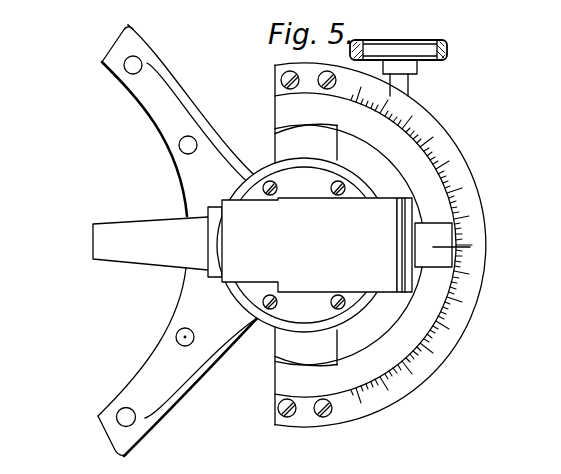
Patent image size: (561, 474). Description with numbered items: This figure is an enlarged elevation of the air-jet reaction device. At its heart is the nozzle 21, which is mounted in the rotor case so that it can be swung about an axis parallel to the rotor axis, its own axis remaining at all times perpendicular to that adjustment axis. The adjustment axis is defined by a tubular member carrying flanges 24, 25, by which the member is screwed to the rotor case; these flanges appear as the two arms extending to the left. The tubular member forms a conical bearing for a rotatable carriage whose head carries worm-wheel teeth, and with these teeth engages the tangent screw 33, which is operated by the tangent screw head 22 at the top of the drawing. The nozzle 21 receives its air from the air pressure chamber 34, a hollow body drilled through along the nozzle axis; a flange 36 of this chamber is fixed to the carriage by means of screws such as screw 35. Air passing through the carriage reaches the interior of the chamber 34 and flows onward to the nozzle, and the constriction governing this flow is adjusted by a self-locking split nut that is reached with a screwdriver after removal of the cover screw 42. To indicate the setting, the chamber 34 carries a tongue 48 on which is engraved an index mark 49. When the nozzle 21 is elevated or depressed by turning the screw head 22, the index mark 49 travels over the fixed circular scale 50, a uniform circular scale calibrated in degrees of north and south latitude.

The nozzle 21 is at (135, 250).
The tangent screw head 22 is at (447, 48).
The flange 24 is at (183, 97).
The flange 25 is at (200, 360).
The tangent screw 33 is at (403, 82).
The air pressure chamber 34 is at (234, 233).
The screw 35 is at (342, 304).
The flange 36 is at (303, 310).
The cover screw 42 is at (415, 232).
The tongue 48 is at (420, 260).
The index mark 49 is at (436, 247).
The circular scale 50 is at (460, 170).